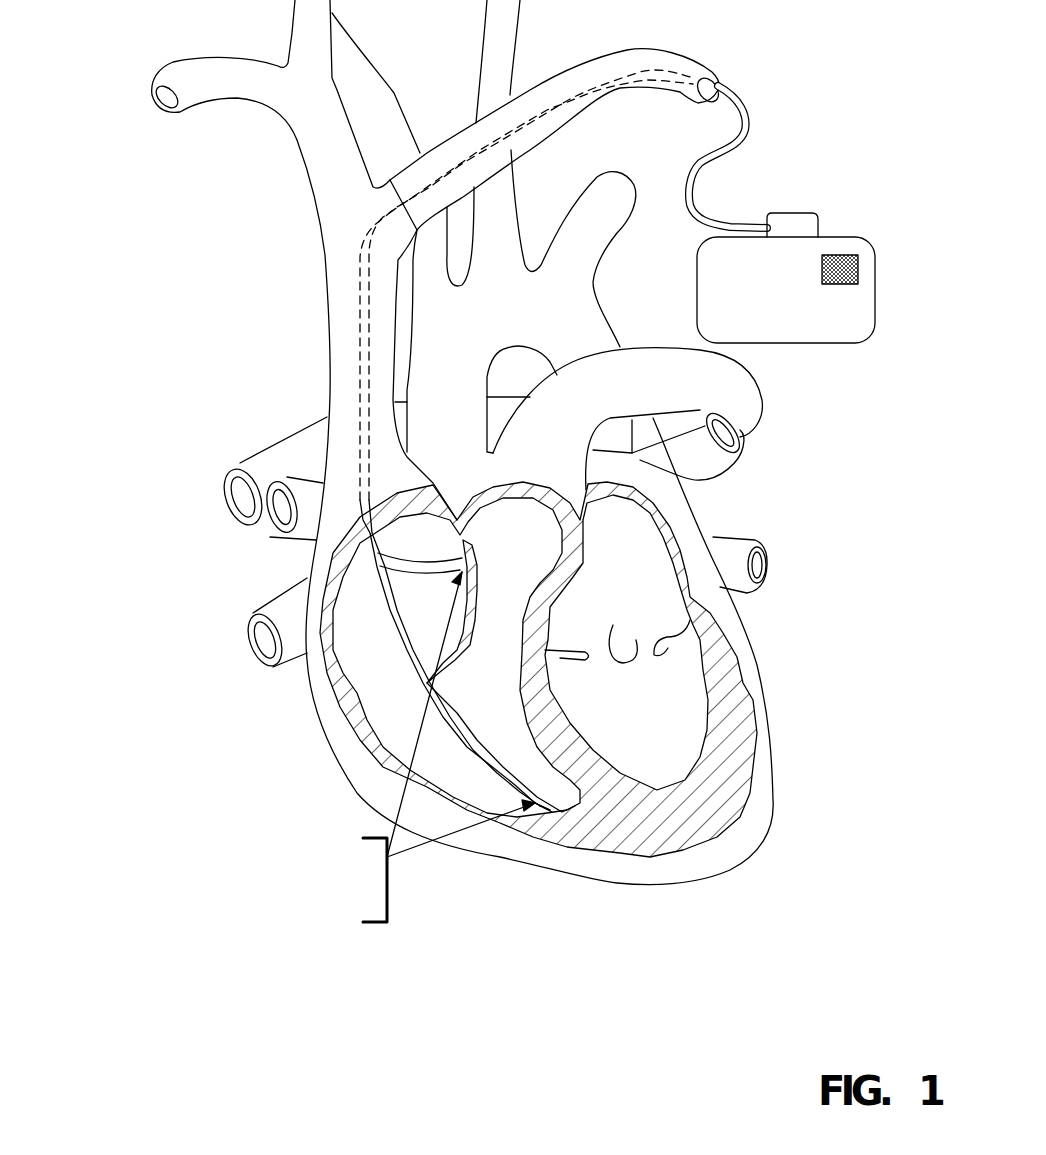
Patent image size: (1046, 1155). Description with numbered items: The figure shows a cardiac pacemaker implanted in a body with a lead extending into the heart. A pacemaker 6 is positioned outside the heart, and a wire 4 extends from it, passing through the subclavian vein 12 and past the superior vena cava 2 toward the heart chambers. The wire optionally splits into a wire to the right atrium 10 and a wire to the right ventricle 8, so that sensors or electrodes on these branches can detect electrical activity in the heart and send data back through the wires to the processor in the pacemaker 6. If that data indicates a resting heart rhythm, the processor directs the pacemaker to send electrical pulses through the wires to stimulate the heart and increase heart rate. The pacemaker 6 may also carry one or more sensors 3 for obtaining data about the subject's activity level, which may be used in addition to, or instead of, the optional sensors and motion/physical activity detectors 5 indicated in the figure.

The superior vena cava 2 is at (340, 343).
The sensors 3 is at (850, 267).
The wire 4 is at (750, 142).
The sensors and/or motion/physical activity detectors 5 is at (289, 747).
The pacemaker 6 is at (828, 322).
The wire to the right ventricle 8 is at (473, 757).
The wire to the right atrium 10 is at (424, 575).
The subclavian vein 12 is at (720, 83).